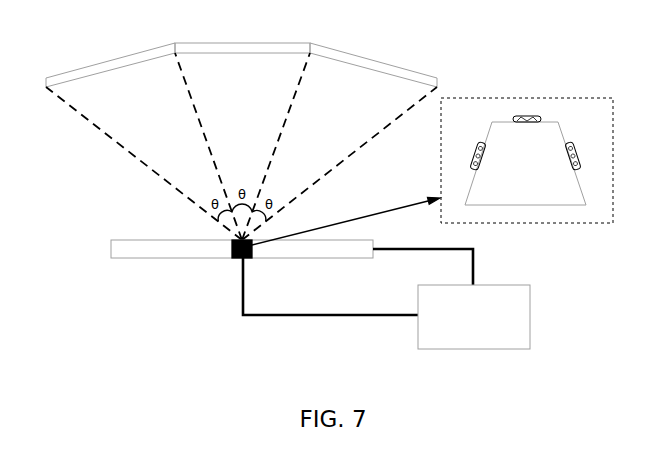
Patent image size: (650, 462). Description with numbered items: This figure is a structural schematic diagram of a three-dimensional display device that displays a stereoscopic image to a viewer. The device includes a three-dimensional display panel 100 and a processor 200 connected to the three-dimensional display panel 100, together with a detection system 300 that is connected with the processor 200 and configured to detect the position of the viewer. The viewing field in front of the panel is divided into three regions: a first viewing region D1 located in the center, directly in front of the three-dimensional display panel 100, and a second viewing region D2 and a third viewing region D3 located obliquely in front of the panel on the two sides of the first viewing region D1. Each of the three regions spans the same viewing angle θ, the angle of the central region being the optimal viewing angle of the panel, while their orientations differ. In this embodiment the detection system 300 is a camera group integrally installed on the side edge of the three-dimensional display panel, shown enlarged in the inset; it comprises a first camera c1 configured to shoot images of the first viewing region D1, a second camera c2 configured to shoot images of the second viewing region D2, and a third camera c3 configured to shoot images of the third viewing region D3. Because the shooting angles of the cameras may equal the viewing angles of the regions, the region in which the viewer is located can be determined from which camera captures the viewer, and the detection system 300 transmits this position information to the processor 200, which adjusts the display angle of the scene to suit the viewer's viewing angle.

The three-dimensional display panel 100 is at (219, 274).
The processor 200 is at (194, 286).
The detection system 300 is at (497, 298).
The first viewing region D1 is at (242, 35).
The second viewing region D2 is at (110, 61).
The third viewing region D3 is at (373, 62).
The first camera c1 is at (528, 116).
The second camera c2 is at (478, 152).
The third camera c3 is at (575, 152).